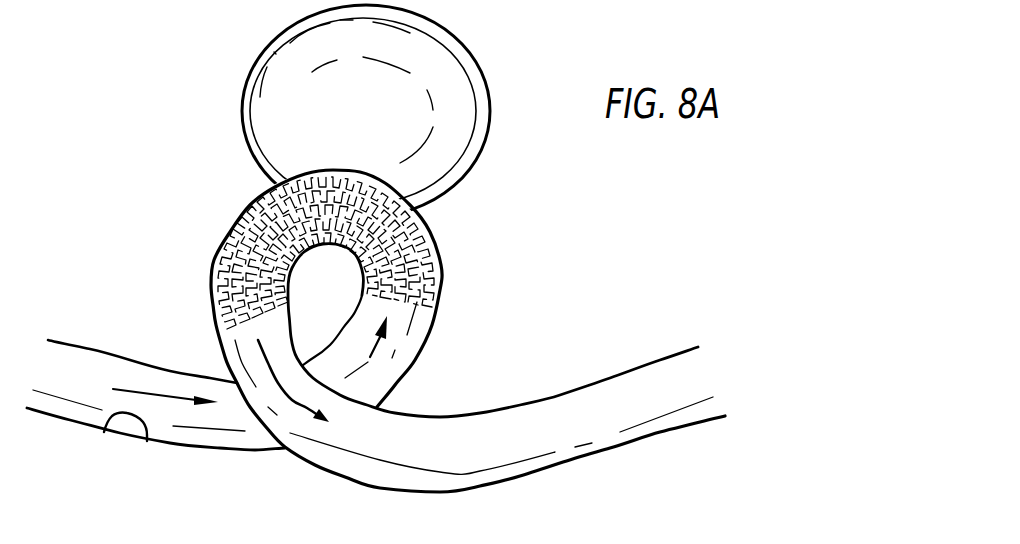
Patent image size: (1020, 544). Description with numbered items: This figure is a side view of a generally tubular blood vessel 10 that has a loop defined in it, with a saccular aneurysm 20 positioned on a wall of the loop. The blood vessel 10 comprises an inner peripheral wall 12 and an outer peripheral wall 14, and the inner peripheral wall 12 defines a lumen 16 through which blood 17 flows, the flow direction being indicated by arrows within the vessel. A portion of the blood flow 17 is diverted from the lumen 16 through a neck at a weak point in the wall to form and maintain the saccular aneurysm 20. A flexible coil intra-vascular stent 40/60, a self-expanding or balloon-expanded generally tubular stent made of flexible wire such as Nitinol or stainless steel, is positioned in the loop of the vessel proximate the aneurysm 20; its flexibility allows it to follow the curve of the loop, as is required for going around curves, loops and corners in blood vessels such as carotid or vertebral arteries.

The blood vessel 10 is at (537, 288).
The inner peripheral wall 12 is at (110, 428).
The outer peripheral wall 14 is at (195, 373).
The lumen 16 is at (43, 370).
The blood 17 is at (133, 390).
The saccular aneurysm 20 is at (448, 55).
The flexible coil intra-vascular stent 40 is at (297, 251).
The flexible coil intra-vascular stent 60 is at (228, 242).